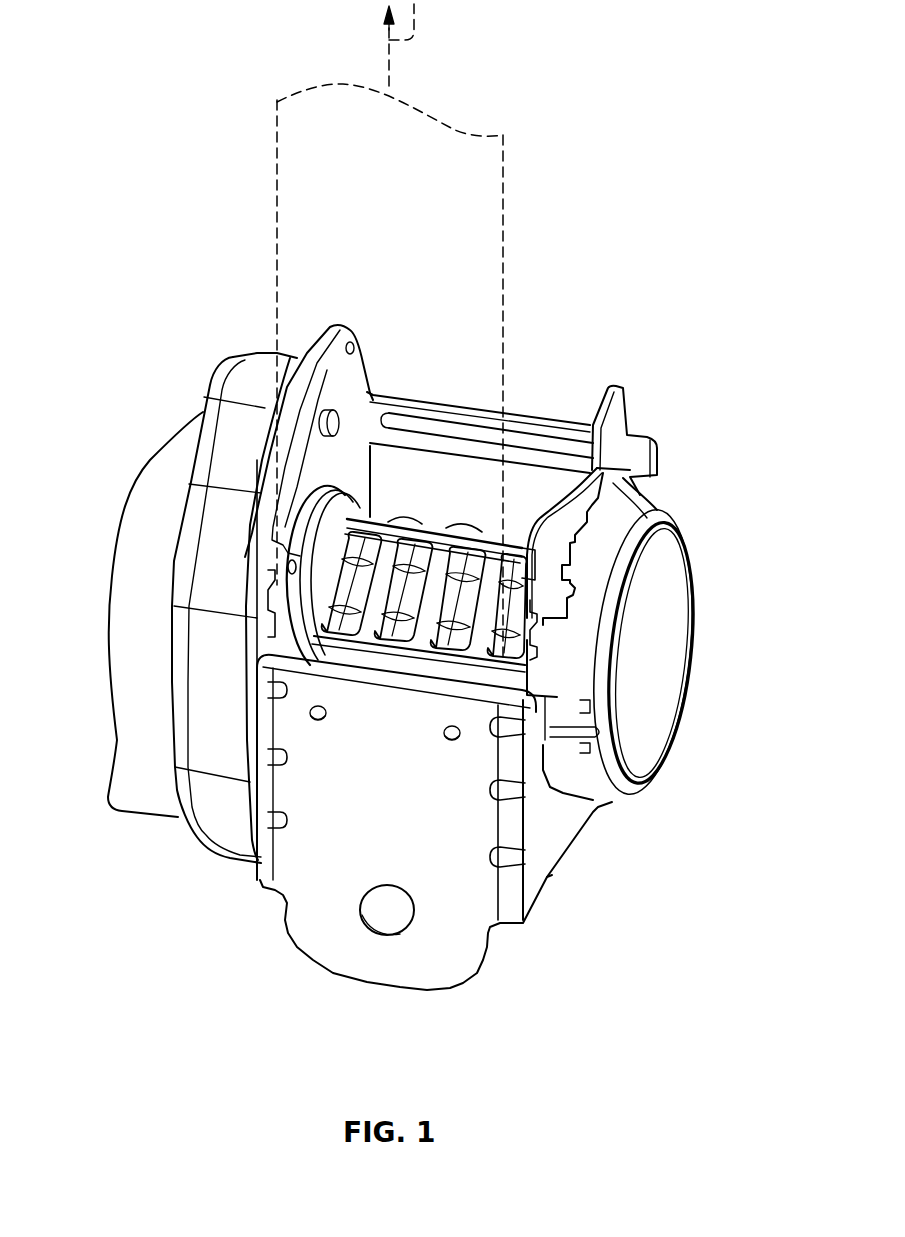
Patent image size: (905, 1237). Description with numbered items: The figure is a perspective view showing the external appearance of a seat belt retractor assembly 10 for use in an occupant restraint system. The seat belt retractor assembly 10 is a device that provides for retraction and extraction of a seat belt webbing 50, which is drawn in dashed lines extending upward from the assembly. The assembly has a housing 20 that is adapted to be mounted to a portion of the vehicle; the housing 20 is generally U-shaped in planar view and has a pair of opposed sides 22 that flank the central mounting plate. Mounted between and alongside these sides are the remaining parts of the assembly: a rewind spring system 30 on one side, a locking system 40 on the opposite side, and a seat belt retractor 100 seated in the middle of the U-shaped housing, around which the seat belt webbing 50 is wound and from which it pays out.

The seat belt retractor assembly 10 is at (660, 131).
The housing 20 is at (345, 953).
The opposed sides 22 is at (543, 878).
The rewind spring system 30 is at (668, 573).
The locking system 40 is at (232, 388).
The seat belt webbing 50 is at (277, 160).
The seat belt retractor 100 is at (443, 510).